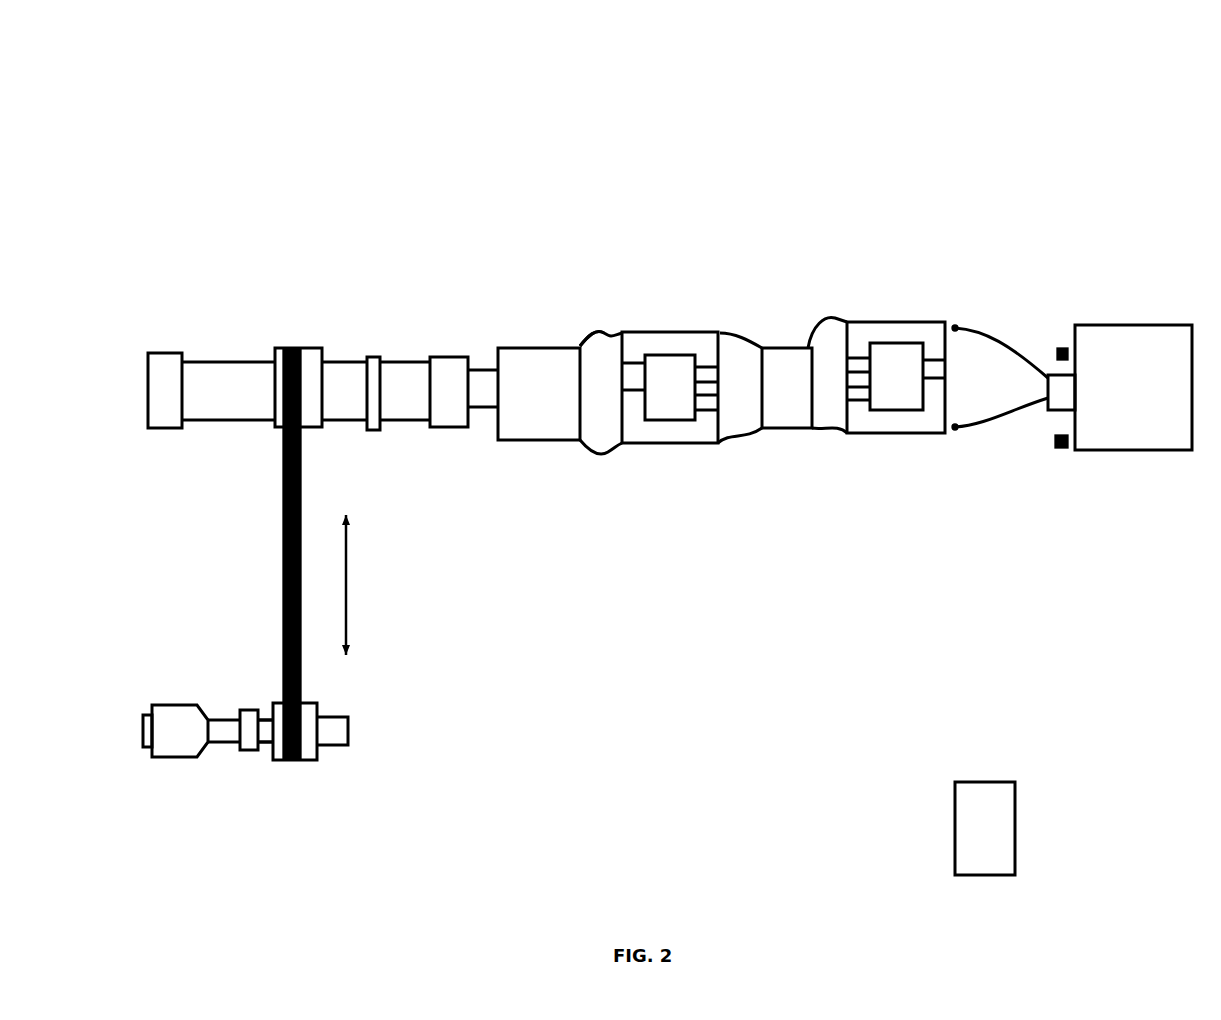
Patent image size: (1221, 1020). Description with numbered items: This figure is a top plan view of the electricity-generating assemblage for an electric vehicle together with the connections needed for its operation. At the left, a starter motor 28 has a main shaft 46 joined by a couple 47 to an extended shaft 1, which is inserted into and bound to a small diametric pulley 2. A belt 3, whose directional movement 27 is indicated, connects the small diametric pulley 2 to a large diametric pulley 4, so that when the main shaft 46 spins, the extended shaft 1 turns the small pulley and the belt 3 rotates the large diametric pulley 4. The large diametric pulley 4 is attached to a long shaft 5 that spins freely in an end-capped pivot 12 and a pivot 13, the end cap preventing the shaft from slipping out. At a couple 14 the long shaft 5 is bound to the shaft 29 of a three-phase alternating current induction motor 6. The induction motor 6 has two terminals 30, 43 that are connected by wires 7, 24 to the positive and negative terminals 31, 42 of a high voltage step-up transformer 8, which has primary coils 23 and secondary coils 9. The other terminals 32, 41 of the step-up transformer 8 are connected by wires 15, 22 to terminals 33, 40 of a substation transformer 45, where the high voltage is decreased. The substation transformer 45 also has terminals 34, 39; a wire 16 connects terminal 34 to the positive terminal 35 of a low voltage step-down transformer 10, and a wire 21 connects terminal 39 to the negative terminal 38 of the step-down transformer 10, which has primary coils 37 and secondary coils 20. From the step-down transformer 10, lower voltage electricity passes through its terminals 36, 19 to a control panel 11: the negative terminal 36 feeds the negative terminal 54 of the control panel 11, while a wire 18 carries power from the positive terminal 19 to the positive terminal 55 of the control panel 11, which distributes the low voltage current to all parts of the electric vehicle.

The extended shaft 1 is at (350, 736).
The small diametric pulley 2 is at (314, 744).
The belt 3 is at (281, 517).
The large diametric pulley 4 is at (315, 355).
The long shaft 5 is at (227, 378).
The 3-phase alternating current induction motor 6 is at (515, 348).
The wire 7 is at (593, 328).
The high voltage step-up transformer 8 is at (662, 332).
The secondary coils of the high voltage step-up transformer 9 is at (703, 360).
The low voltage step-down transformer 10 is at (903, 343).
The control panel 11 is at (1123, 325).
The end-capped pivot 12 is at (170, 360).
The pivot 13 is at (378, 357).
The couple 14 is at (437, 357).
The wire 15 is at (753, 337).
The wire 16 is at (835, 317).
The wire 18 is at (1012, 413).
The positive terminal of the low voltage step-down transformer 19 is at (933, 392).
The secondary coils of the low voltage step-down transformer 20 is at (863, 400).
The wire 21 is at (818, 432).
The wire 22 is at (752, 445).
The primary coils of the high voltage step-up transformer 23 is at (632, 400).
The wire 24 is at (588, 448).
The directional movement of the belt 27 is at (352, 600).
The starter motor 28 is at (202, 777).
The shaft of the 3-phase alternating current induction motor 29 is at (482, 370).
The terminal of the 3-phase alternating current induction motor 30 is at (562, 348).
The positive terminal of the high voltage step-up transformer 31 is at (613, 332).
The negative terminal of the high voltage step-up transformer 32 is at (728, 333).
The terminal of the substation transformer 33 is at (773, 353).
The terminal of the substation transformer 34 is at (797, 350).
The positive terminal of the low voltage step-down transformer 35 is at (852, 322).
The negative terminal of the low voltage step-down transformer 36 is at (965, 327).
The primary coils of the low voltage step-down transformer 37 is at (955, 427).
The negative terminal of the low voltage step-down transformer 38 is at (833, 432).
The terminal of the substation transformer 39 is at (799, 428).
The terminal of the substation transformer 40 is at (779, 428).
The positive terminal of the high voltage step-up transformer 41 is at (722, 443).
The negative terminal of the high voltage step-up transformer 42 is at (608, 452).
The terminal of the 3-phase alternating current induction motor 43 is at (558, 440).
The substation transformer 45 is at (788, 412).
The main shaft 46 is at (233, 741).
The couple 47 is at (259, 741).
The negative terminal of the control panel 54 is at (1057, 352).
The positive terminal of the control panel 55 is at (1055, 445).